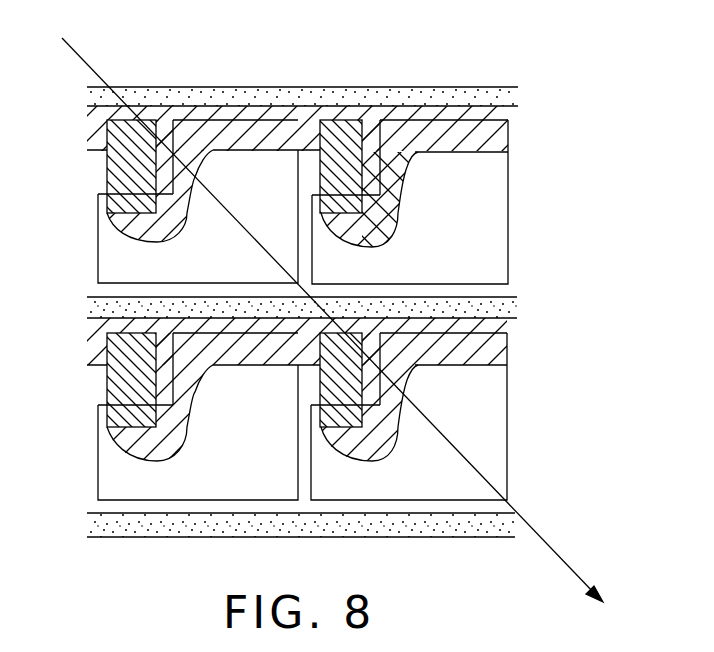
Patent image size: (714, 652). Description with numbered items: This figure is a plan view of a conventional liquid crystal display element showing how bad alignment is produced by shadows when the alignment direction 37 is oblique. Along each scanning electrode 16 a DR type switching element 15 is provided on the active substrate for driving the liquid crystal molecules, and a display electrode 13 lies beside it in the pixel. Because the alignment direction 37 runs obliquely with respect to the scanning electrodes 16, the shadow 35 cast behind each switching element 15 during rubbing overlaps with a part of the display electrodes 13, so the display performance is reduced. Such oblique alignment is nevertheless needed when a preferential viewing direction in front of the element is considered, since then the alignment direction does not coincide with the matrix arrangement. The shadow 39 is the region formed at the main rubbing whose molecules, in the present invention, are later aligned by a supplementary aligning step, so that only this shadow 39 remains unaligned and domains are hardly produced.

The display electrode 13 is at (112, 260).
The DR type switching element 15 is at (112, 178).
The scanning electrode 16 is at (393, 98).
The shadow 35 is at (223, 108).
The alignment direction 37 is at (547, 543).
The shadow 39 is at (400, 217).